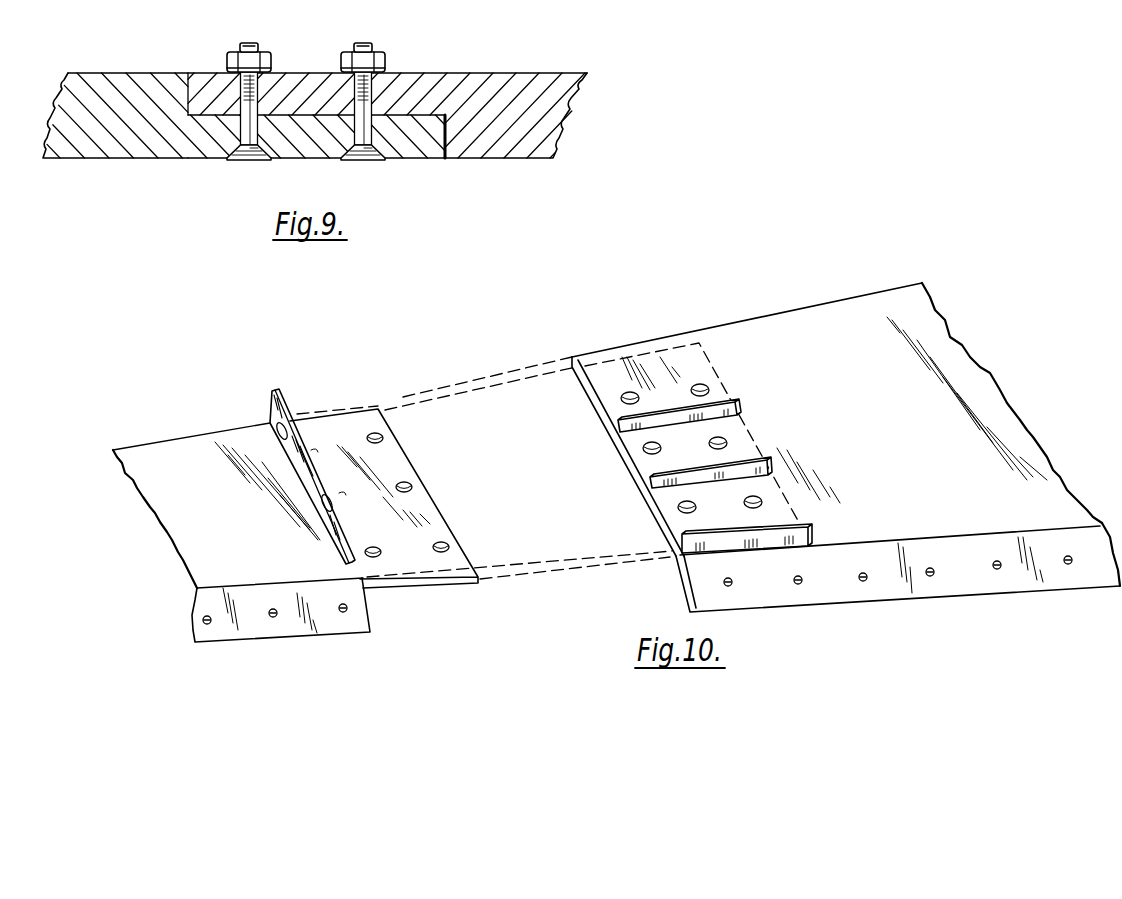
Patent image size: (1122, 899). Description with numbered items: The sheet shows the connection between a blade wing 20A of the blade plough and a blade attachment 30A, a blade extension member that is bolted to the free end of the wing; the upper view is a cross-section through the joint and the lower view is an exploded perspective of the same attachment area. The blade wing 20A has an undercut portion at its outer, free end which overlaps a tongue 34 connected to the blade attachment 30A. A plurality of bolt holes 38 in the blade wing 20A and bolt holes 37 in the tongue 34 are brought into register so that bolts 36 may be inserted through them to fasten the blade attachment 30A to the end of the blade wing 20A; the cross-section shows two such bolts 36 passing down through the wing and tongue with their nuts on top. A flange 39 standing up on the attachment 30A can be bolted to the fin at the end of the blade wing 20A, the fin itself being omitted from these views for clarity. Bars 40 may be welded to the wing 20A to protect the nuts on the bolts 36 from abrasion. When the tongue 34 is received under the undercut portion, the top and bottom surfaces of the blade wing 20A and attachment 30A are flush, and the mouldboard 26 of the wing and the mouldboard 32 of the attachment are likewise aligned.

In FIG. 9, the blade wing 20A is at (517, 82).
In FIG. 10, the blade wing 20A is at (917, 441).
In FIG. 9, the blade attachment 30A is at (117, 80).
In FIG. 10, the blade attachment 30A is at (258, 513).
In FIG. 9, the tongue 34 is at (310, 147).
In FIG. 10, the tongue 34 is at (334, 433).
In FIG. 9, the bolts 36 is at (350, 67).
In FIG. 10, the bolt holes 37 is at (413, 487).
In FIG. 10, the bolt holes 38 is at (643, 448).
In FIG. 10, the flange 39 is at (270, 412).
In FIG. 10, the bars 40 is at (677, 468).
In FIG. 10, the mouldboard 32 is at (278, 617).
In FIG. 10, the mouldboard 26 is at (882, 584).